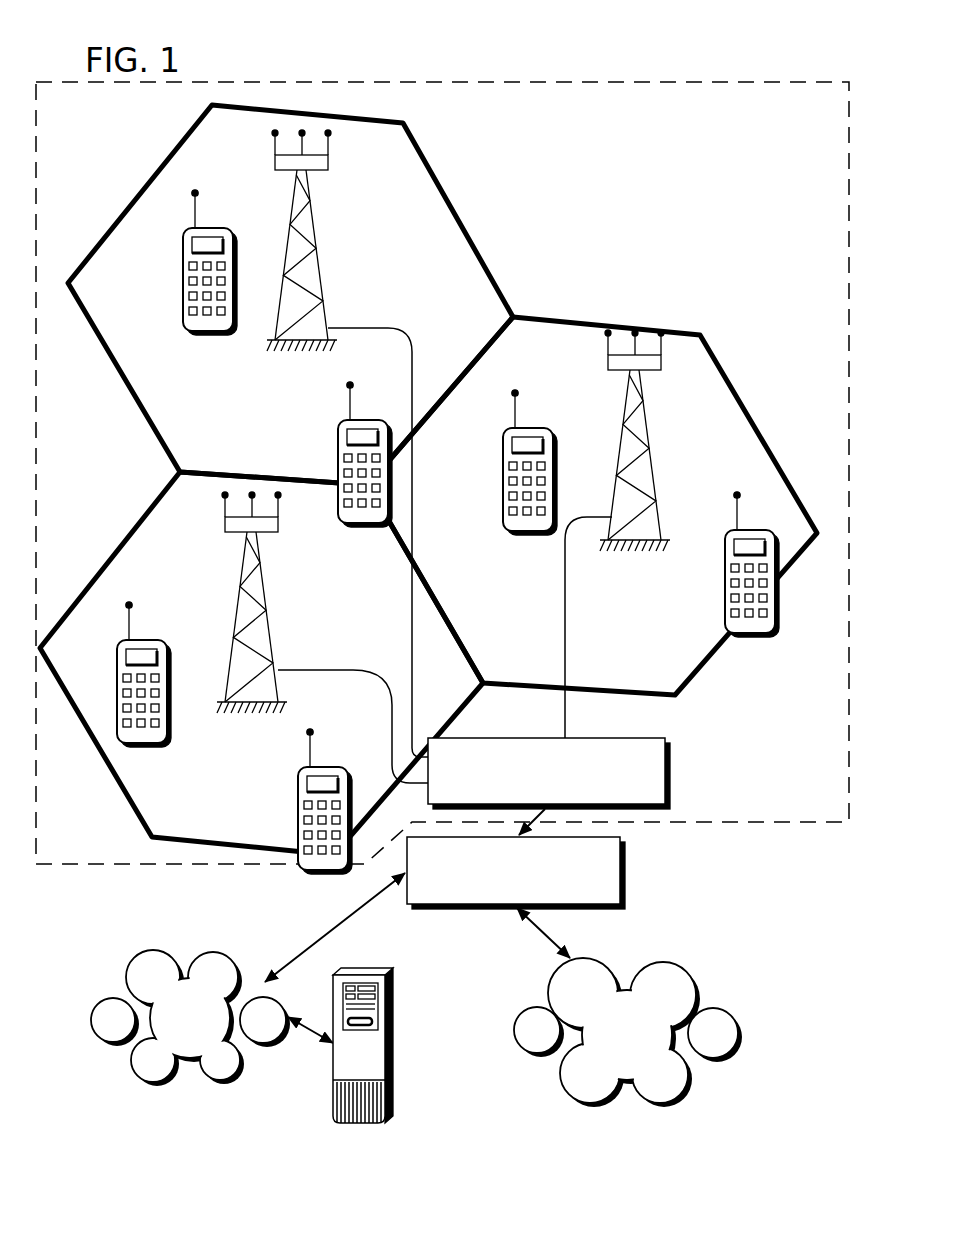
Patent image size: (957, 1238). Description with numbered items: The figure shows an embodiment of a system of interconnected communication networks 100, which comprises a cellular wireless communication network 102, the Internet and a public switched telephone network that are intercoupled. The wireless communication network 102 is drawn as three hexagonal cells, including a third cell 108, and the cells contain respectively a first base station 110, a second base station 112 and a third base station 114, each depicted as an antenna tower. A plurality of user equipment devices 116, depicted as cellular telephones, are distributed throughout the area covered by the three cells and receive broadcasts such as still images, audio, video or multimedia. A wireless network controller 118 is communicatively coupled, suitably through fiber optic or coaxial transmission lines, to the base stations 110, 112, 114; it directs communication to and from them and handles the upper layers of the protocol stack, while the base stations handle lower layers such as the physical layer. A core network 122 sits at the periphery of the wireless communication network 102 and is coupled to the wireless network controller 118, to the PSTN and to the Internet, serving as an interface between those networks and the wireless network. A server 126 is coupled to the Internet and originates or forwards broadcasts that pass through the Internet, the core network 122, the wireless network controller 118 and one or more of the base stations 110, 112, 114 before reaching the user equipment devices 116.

The system of interconnected communication networks 100 is at (563, 147).
The cellular wireless communication network 102 is at (667, 82).
The third cell 108 is at (113, 547).
The first base station 110 is at (308, 276).
The second base station 112 is at (648, 468).
The third base station 114 is at (262, 626).
The user equipment device 116 is at (184, 273).
The wireless network controller 118 is at (663, 737).
The core network 122 is at (462, 908).
The server 126 is at (386, 968).